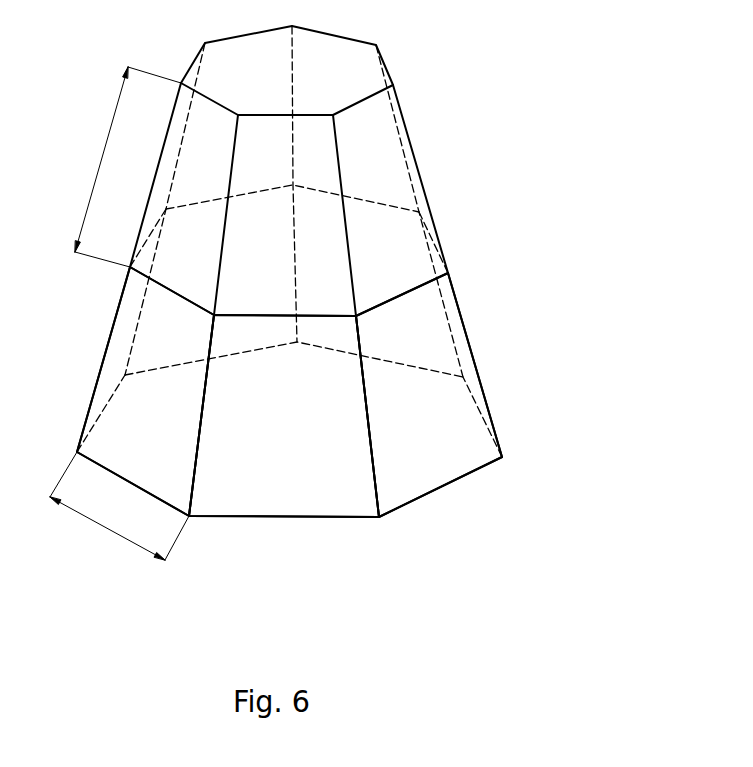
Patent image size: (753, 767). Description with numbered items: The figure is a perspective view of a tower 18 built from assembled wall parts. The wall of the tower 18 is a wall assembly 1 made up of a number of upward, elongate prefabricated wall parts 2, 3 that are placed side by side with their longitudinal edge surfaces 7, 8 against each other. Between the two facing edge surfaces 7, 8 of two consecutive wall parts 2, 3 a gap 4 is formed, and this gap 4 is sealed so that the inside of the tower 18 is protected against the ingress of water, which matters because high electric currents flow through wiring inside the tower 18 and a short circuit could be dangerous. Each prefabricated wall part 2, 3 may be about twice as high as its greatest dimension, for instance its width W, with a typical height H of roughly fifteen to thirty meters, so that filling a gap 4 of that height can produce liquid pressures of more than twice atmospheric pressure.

The wall assembly 1 is at (311, 315).
The prefabricated wall part 2 is at (361, 435).
The prefabricated wall part 3 is at (303, 471).
The gap 4 is at (202, 433).
The longitudinal edge surface 7 is at (381, 357).
The longitudinal edge surface 8 is at (466, 328).
The tower 18 is at (428, 157).